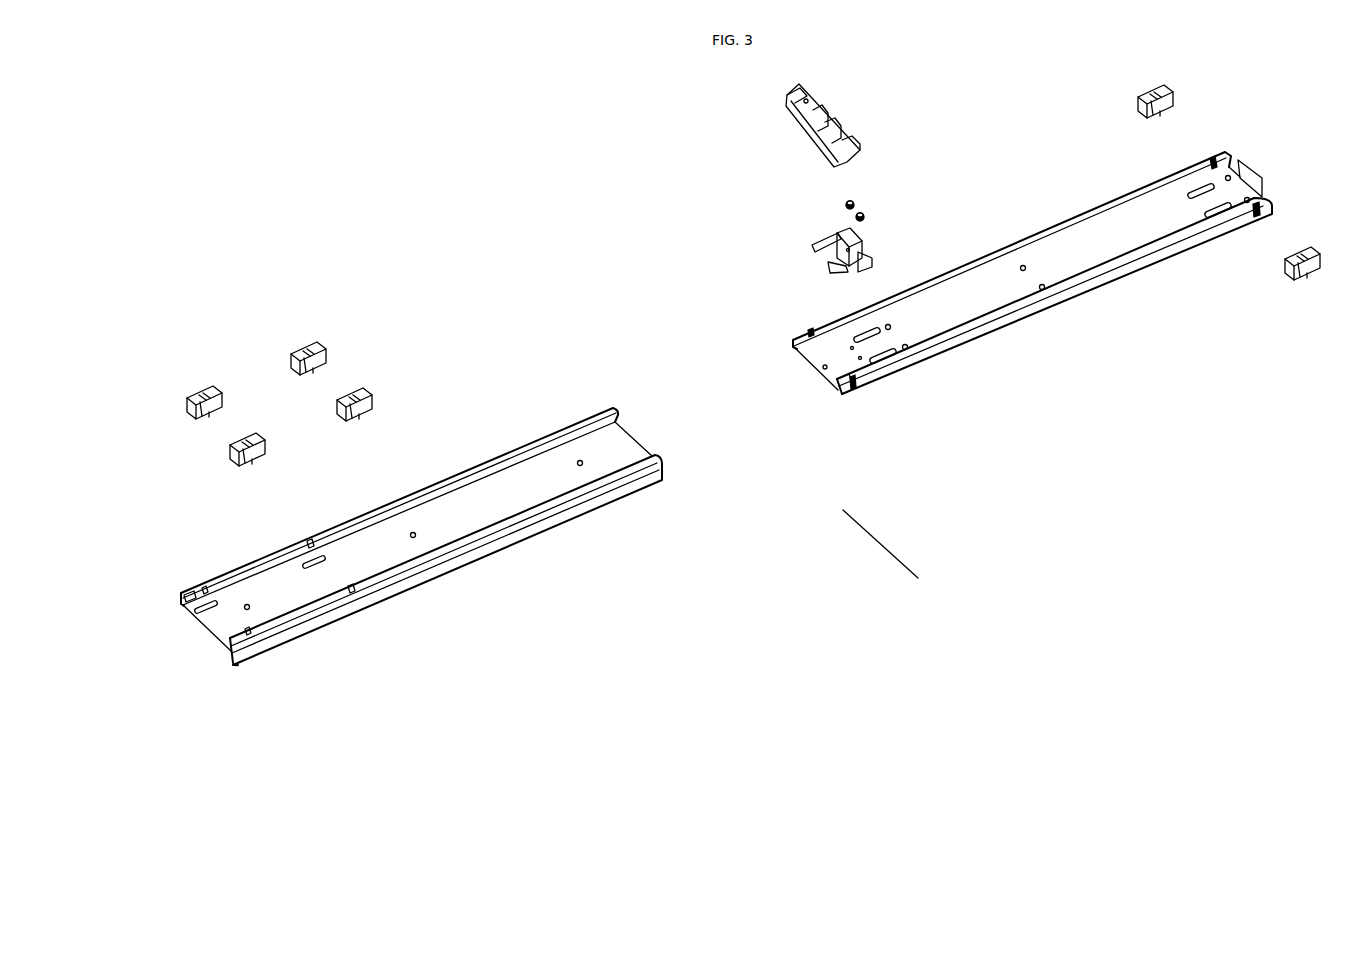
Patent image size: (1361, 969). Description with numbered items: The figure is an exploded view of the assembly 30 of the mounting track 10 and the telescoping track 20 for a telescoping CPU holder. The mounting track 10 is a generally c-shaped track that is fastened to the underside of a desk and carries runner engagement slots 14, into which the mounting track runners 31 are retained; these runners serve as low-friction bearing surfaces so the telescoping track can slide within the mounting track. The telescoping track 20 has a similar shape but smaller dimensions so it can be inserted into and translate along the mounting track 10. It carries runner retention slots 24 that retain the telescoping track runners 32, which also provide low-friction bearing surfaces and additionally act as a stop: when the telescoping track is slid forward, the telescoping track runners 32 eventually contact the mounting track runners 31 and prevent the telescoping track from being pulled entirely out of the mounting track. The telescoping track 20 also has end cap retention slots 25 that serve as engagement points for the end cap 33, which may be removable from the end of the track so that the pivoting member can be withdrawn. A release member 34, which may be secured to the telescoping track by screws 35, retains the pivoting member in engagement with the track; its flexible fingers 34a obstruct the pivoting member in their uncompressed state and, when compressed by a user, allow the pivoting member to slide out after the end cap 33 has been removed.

The mounting track 10 is at (485, 502).
The runner engagement slots 14 is at (350, 589).
The mounting track runners 31 is at (337, 407).
The telescoping track 20 is at (963, 295).
The runner retention slots 24 is at (1213, 157).
The end cap retention slots 25 is at (809, 333).
The telescoping track runners 32 is at (1172, 100).
The end cap 33 is at (800, 128).
The release member 34 is at (860, 245).
The flexible fingers 34a is at (827, 268).
The screws 35 is at (862, 207).
The assembly 30 is at (892, 556).